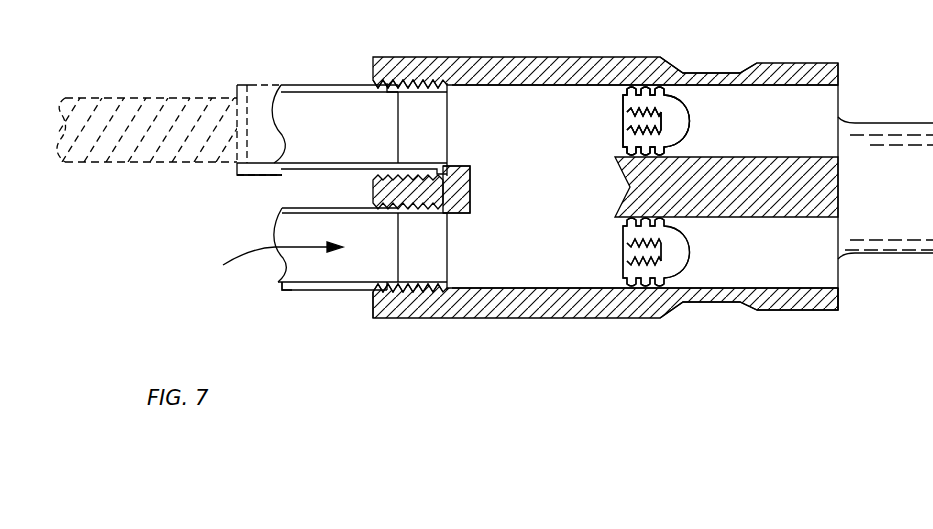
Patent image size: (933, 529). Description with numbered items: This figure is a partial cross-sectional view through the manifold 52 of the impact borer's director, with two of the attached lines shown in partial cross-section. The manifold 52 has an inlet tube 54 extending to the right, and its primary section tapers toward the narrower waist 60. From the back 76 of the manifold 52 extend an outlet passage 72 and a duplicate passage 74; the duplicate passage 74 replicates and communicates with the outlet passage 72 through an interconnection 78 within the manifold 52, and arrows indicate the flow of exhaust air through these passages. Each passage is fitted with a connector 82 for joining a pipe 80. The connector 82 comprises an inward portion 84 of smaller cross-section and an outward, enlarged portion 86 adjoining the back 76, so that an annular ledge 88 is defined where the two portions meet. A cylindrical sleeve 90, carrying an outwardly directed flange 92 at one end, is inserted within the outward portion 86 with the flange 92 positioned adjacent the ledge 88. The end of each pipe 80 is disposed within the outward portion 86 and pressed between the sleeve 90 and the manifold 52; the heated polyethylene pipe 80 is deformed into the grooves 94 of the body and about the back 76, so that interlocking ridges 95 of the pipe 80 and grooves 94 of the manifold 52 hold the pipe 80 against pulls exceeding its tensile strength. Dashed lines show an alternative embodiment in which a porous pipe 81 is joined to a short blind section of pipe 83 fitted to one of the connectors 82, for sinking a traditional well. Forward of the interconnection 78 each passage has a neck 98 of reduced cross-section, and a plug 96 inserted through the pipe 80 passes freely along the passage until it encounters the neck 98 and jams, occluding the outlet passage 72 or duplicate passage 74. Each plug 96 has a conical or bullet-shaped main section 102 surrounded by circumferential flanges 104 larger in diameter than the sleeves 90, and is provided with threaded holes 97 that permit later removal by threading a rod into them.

The manifold 52 is at (592, 318).
The inlet tube 54 is at (875, 123).
The waist 60 is at (727, 303).
The outlet passage 72 is at (895, 276).
The duplicate passage 74 is at (335, 117).
The back 76 is at (373, 312).
The interconnection 78 is at (519, 172).
The pipe 80 is at (283, 180).
The porous pipe 81 is at (148, 97).
The connector 82 is at (431, 76).
The blind section of pipe 83 is at (250, 85).
The inward portion 84 is at (517, 58).
The outward portion 86 is at (399, 290).
The annular ledge 88 is at (485, 90).
The cylindrical sleeve 90 is at (449, 120).
The flange 92 is at (377, 180).
The grooves 94 is at (375, 75).
The interlocking ridges 95 is at (453, 189).
The plug 96 is at (690, 117).
The threaded holes 97 is at (625, 121).
The neck 98 is at (690, 90).
The main section 102 is at (623, 147).
The circumferential flanges 104 is at (662, 153).